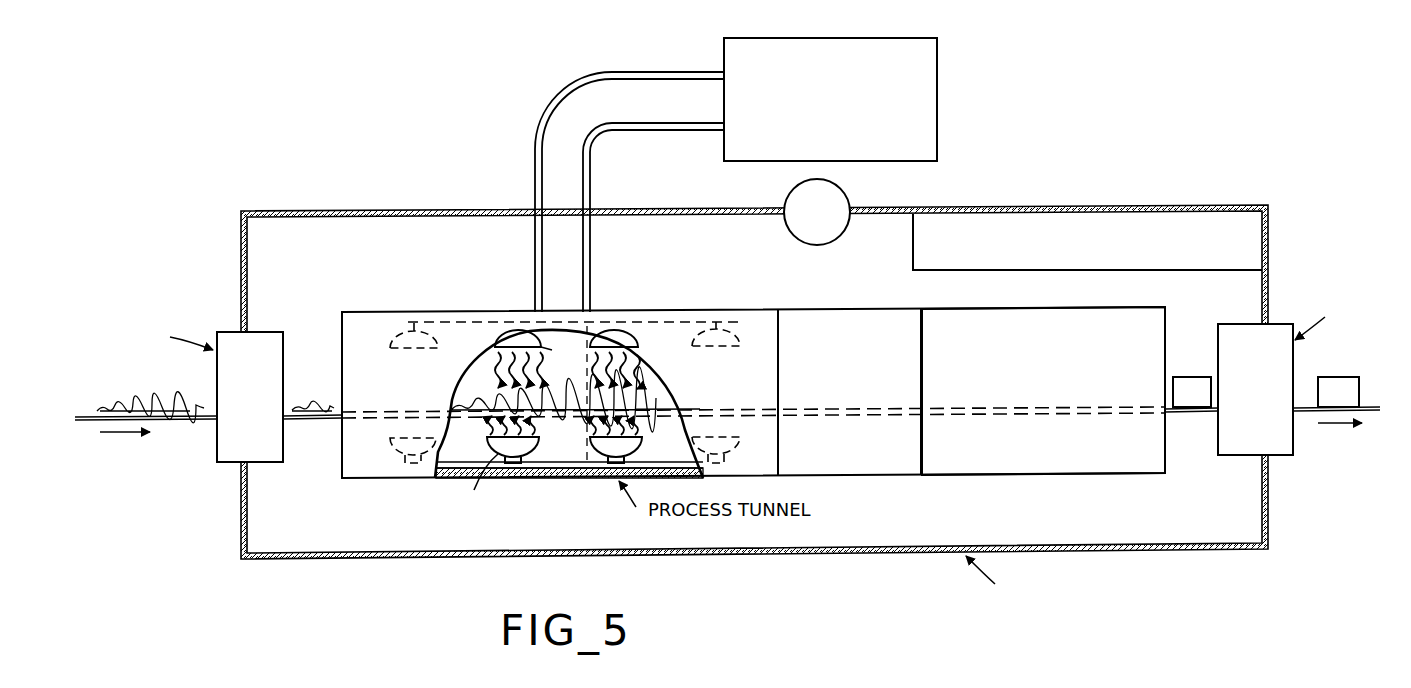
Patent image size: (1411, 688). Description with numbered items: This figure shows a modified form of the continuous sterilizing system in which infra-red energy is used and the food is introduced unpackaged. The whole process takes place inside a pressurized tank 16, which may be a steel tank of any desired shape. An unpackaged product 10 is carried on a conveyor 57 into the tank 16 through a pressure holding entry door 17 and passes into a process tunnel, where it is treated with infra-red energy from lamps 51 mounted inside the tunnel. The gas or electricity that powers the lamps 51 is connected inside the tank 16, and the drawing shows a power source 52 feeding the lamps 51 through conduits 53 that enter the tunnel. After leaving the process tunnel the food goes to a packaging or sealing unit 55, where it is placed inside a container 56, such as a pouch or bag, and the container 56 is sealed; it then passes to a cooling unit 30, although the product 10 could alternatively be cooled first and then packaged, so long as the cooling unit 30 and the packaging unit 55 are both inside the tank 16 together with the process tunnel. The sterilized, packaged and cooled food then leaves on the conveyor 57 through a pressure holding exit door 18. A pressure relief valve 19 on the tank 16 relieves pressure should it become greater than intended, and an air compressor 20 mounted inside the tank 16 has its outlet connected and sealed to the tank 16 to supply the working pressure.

The product 10 is at (398, 397).
The pressurized tank 16 is at (906, 556).
The pressure holding entry door 17 is at (262, 379).
The pressure holding exit door 18 is at (1267, 373).
The pressure relief valve 19 is at (846, 198).
The air compressor 20 is at (1210, 230).
The cooling unit 30 is at (1036, 450).
The lamps 51 is at (590, 444).
The power source 52 is at (940, 84).
The power conduits 53 is at (643, 70).
The packaging or sealing unit 55 is at (834, 454).
The container 56 is at (1191, 375).
The conveyor 57 is at (94, 424).